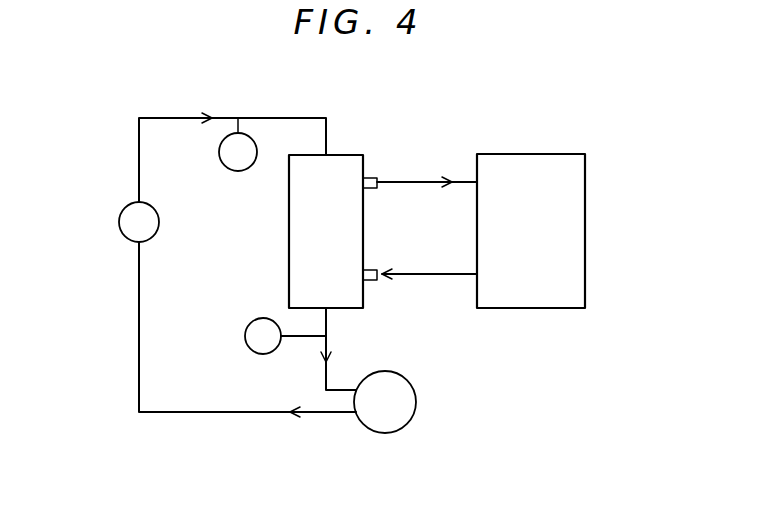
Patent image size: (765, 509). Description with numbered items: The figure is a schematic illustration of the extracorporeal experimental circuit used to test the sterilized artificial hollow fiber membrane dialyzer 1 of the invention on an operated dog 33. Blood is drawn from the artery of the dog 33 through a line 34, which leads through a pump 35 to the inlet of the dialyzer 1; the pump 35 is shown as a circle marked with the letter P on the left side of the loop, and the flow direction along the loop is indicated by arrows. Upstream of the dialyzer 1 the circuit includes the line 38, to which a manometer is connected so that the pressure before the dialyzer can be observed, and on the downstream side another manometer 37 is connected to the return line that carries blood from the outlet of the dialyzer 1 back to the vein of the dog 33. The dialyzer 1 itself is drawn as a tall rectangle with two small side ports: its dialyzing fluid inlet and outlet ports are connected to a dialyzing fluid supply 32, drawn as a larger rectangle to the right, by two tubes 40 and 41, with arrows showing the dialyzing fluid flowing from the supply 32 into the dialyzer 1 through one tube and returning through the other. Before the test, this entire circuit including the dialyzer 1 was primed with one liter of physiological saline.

The dialyzer 1 is at (305, 230).
The dialyzing fluid supply 32 is at (571, 218).
The dog 33 is at (415, 413).
The line 34 is at (243, 412).
The pump 35 is at (122, 213).
The manometer 37 is at (248, 325).
The line 38 is at (269, 118).
The tube 40 is at (425, 275).
The tube 41 is at (410, 182).